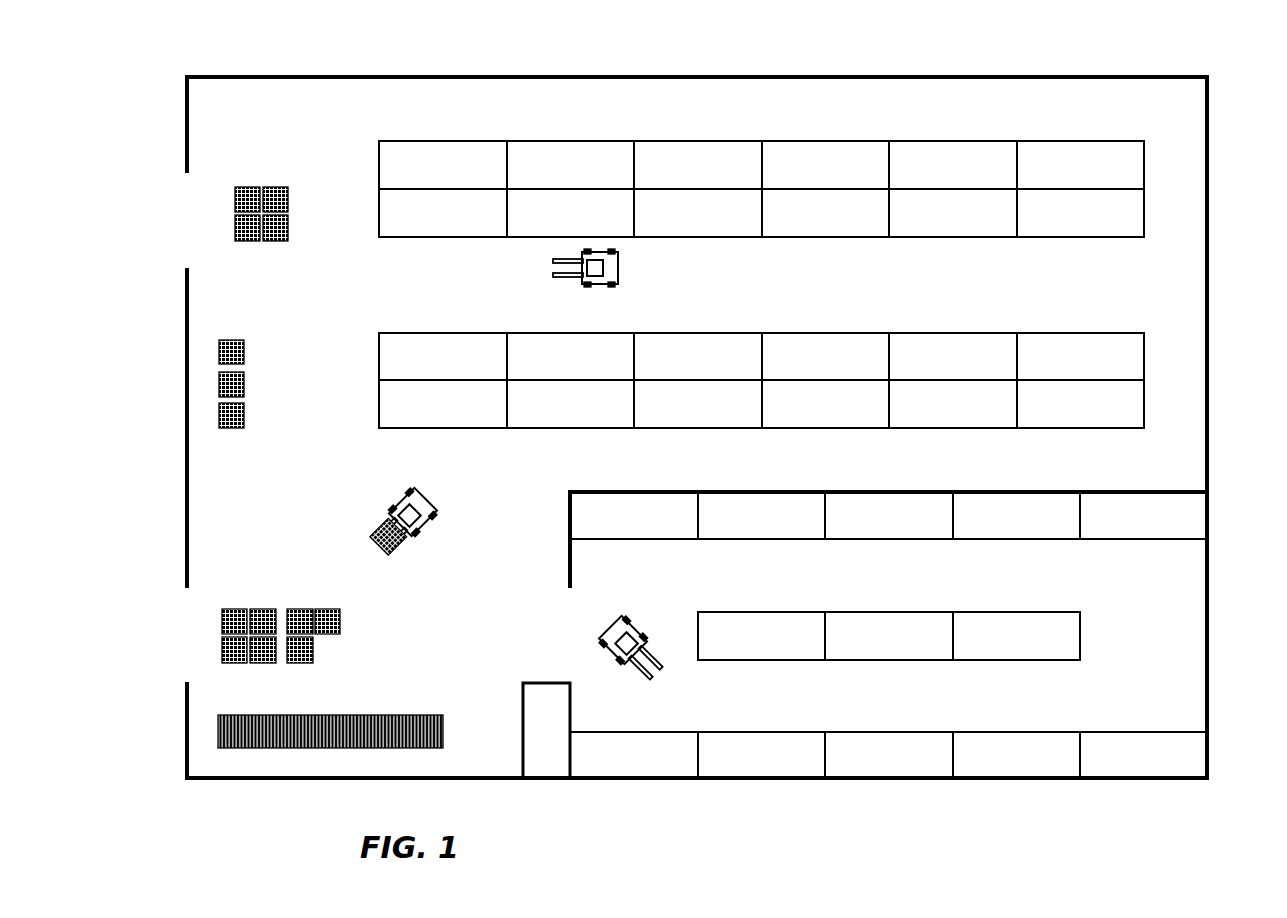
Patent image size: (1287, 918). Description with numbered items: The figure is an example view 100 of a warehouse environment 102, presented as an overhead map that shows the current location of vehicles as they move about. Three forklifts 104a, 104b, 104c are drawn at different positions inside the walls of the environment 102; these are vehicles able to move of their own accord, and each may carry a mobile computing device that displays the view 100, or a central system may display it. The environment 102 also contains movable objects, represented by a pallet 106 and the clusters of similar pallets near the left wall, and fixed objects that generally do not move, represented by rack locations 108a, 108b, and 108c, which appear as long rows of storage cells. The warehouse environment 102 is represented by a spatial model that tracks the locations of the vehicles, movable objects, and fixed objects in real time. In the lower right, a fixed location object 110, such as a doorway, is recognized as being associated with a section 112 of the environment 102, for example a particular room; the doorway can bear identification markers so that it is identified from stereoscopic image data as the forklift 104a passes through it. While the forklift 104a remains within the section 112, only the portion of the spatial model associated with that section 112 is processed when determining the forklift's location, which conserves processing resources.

The example view 100 is at (175, 806).
The warehouse environment 102 is at (1170, 77).
The forklift 104a is at (600, 635).
The forklift 104b is at (427, 493).
The forklift 104c is at (618, 272).
The pallet 106 is at (244, 428).
The rack location 108a is at (547, 686).
The rack location 108b is at (596, 531).
The rack location 108c is at (400, 228).
The fixed location object 110 is at (570, 582).
The section 112 is at (875, 635).